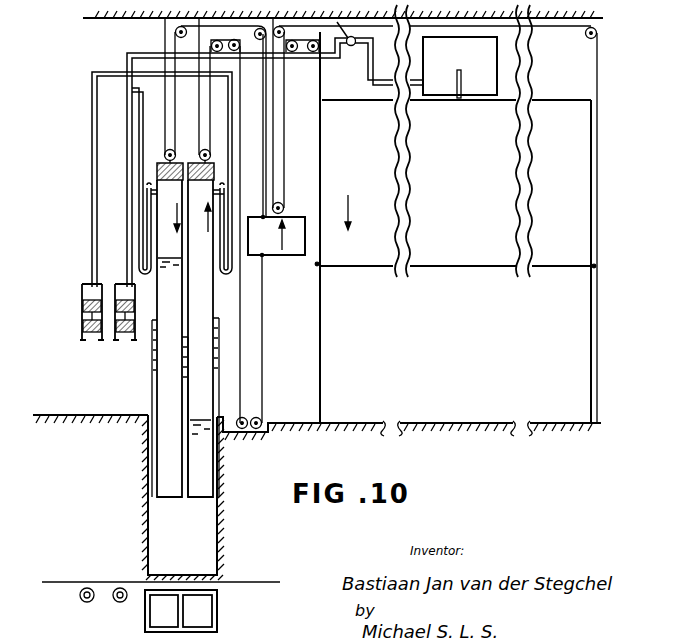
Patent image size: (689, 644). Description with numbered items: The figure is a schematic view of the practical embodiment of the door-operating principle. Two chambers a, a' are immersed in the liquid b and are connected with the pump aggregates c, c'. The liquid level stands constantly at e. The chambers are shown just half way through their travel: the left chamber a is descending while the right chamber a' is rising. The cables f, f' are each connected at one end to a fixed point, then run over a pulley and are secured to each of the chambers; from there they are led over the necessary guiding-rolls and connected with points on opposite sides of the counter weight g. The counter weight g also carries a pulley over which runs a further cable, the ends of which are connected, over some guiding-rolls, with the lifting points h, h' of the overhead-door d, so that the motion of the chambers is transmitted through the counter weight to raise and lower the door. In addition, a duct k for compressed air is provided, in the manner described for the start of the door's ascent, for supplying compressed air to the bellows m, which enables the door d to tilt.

The chamber a is at (170, 330).
The chamber a' is at (201, 330).
The liquid b is at (175, 542).
The pump aggregate c is at (129, 312).
The pump aggregate c' is at (84, 312).
The overhead-door d is at (349, 144).
The liquid level e is at (152, 344).
The cable f is at (170, 129).
The cable f' is at (206, 129).
The counter weight g is at (263, 250).
The lifting point h is at (312, 272).
The lifting point h' is at (602, 272).
The duct for compressed air k is at (136, 51).
The bellows m is at (448, 61).